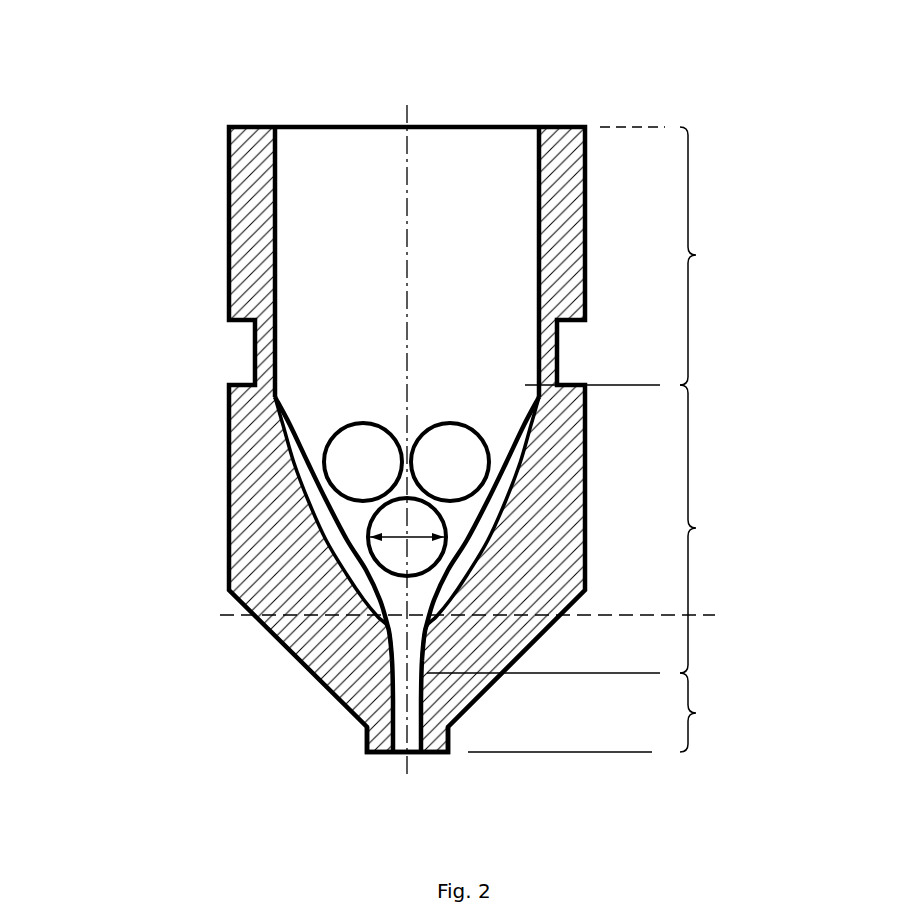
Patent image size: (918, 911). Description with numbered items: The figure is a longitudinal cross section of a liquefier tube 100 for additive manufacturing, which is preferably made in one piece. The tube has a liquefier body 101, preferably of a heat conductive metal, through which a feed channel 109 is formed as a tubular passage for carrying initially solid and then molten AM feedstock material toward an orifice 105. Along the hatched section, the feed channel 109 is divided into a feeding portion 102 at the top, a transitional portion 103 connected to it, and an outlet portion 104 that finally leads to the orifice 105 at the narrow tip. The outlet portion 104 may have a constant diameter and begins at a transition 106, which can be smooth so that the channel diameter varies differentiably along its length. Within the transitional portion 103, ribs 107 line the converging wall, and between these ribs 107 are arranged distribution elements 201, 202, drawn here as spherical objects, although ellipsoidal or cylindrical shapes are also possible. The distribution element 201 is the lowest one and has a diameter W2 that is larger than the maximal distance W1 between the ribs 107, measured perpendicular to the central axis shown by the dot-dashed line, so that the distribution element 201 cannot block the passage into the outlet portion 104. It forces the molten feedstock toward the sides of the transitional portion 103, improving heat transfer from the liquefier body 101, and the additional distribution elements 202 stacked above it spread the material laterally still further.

The liquefier tube 100 is at (166, 229).
The liquefier body 101 is at (247, 452).
The feeding portion 102 is at (647, 256).
The transitional portion 103 is at (598, 529).
The outlet portion 104 is at (618, 712).
The orifice 105 is at (413, 756).
The transition 106 is at (370, 686).
The ribs 107 is at (497, 493).
The feed channel 109 is at (459, 166).
The distribution element 201 is at (385, 560).
The additional distribution elements 202 is at (447, 440).
The maximal distance between the ribs W1 is at (492, 618).
The diameter of the distribution element W2 is at (403, 533).